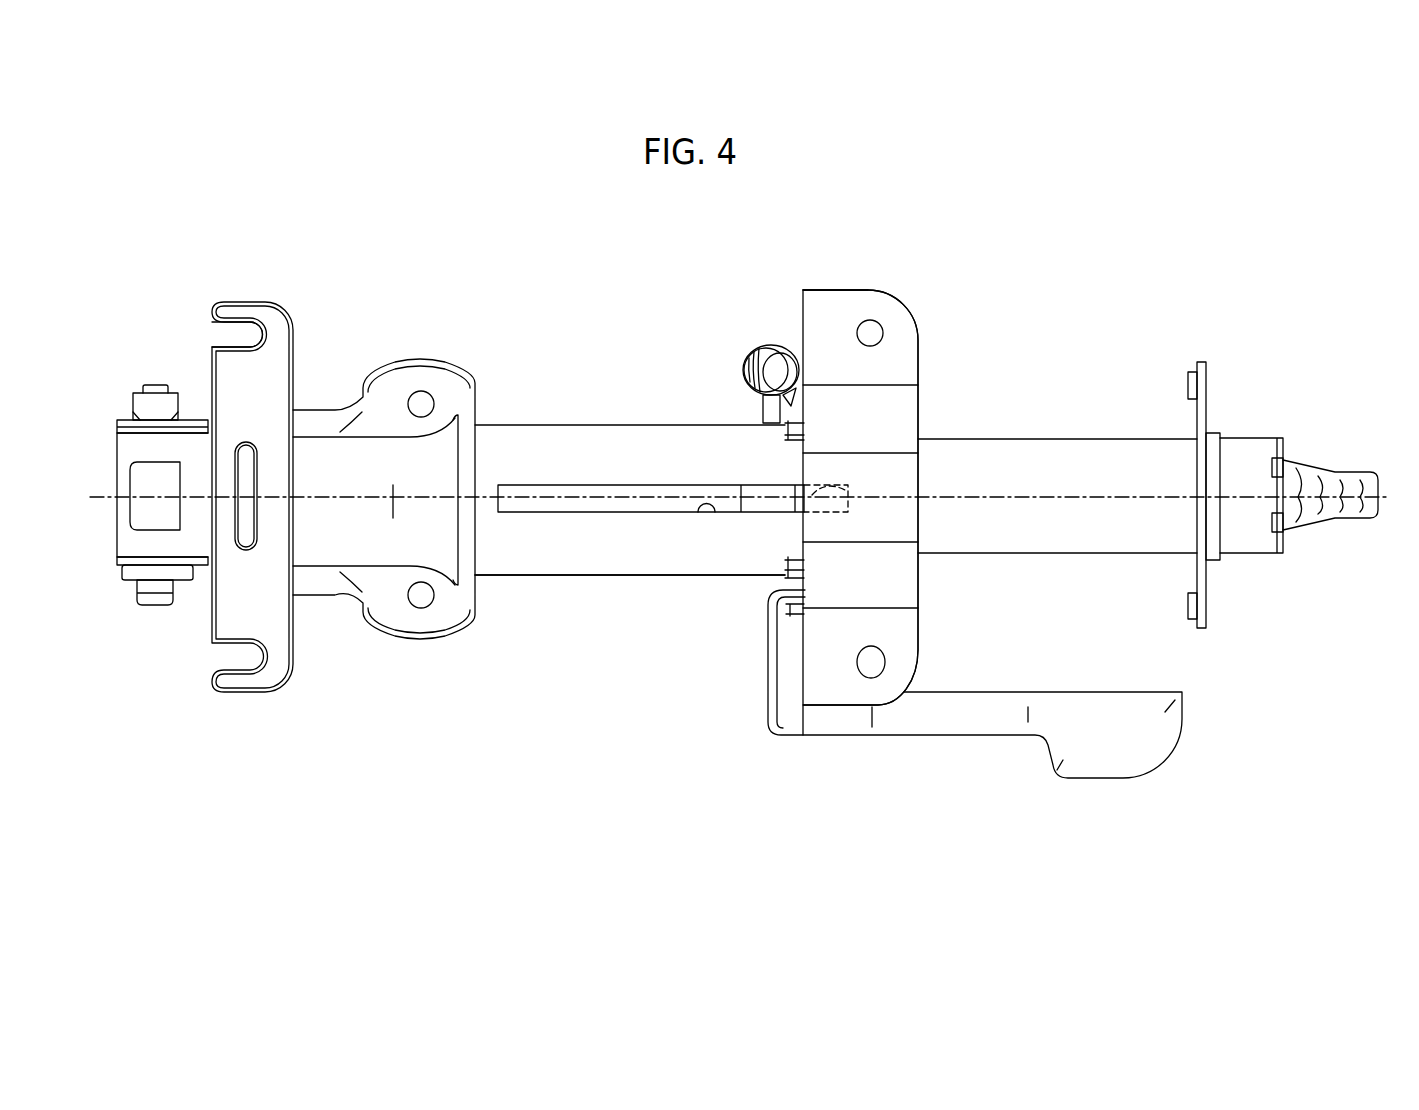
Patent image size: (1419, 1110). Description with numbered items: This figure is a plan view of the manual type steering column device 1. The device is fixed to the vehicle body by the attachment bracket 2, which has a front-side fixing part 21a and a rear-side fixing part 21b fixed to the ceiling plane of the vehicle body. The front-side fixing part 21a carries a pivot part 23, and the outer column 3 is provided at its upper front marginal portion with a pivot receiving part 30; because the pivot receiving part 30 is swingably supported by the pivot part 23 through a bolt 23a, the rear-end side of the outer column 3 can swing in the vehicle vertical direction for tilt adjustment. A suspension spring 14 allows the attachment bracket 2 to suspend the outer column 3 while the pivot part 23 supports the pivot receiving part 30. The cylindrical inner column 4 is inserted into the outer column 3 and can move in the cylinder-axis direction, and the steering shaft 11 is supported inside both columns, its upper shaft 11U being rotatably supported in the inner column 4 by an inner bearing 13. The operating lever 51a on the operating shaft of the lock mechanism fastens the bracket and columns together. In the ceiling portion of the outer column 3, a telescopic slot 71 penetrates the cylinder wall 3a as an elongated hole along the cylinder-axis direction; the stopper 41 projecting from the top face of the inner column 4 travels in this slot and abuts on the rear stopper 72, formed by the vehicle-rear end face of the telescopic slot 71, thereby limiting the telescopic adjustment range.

The steering column device 1 is at (1017, 298).
The attachment bracket 2 is at (306, 350).
The outer column 3 is at (558, 420).
The cylinder wall 3a is at (590, 578).
The inner column 4 is at (1050, 432).
The steering shaft 11 is at (1353, 470).
The upper shaft 11U is at (1307, 475).
The inner bearing 13 is at (1265, 553).
The suspension spring 14 is at (757, 346).
The front-side fixing part 21a is at (247, 310).
The rear-side fixing part 21b is at (835, 293).
The pivot part 23 is at (118, 422).
The bolt 23a is at (137, 598).
The pivot receiving part 30 is at (118, 458).
The stopper 41 is at (757, 505).
The operating lever 51a is at (950, 715).
The telescopic slot 71 is at (703, 508).
The rear stopper 72 is at (805, 482).